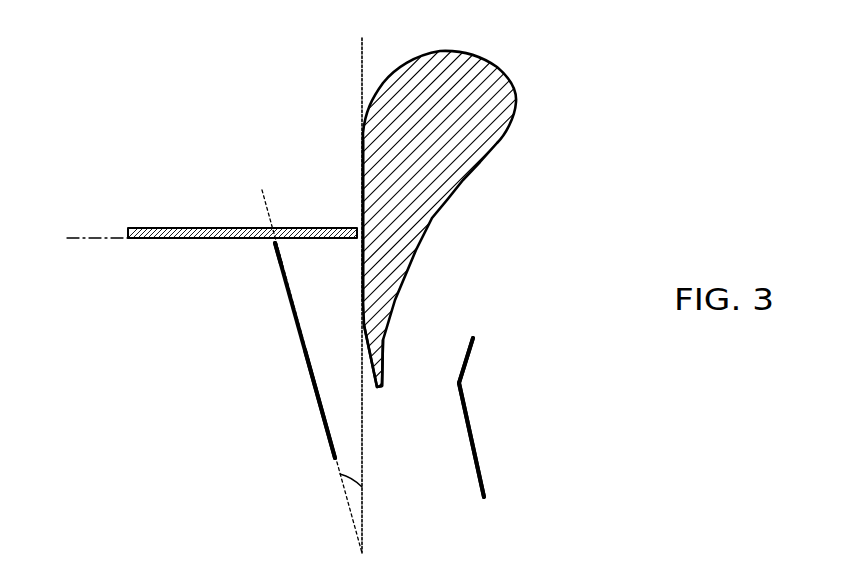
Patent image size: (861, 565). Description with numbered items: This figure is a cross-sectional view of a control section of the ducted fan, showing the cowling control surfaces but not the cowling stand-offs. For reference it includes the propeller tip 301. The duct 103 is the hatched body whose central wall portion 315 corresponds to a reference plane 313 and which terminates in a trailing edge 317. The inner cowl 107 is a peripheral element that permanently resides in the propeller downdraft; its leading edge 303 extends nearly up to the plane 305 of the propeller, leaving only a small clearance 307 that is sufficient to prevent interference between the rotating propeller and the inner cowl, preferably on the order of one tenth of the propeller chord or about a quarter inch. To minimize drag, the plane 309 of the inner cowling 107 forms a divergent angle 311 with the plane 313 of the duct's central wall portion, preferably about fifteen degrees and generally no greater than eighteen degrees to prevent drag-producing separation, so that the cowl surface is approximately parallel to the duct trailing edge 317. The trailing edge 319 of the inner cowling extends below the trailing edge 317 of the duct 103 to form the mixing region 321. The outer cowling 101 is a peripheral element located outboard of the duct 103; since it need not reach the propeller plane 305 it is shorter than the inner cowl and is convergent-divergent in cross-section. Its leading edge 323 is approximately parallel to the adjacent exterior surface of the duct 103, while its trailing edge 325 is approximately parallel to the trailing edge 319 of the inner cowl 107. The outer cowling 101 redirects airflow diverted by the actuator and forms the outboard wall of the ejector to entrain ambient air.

The outer cowling 101 is at (505, 388).
The duct 103 is at (457, 88).
The inner cowl 107 is at (305, 362).
The propeller tip 301 is at (155, 228).
The leading edge 303 is at (259, 264).
The plane 305 is at (96, 248).
The clearance 307 is at (302, 247).
The plane 309 is at (255, 210).
The divergent angle 311 is at (340, 474).
The plane 313 is at (352, 81).
The central wall portion 315 is at (375, 186).
The trailing edge 317 is at (382, 341).
The trailing edge 319 is at (306, 426).
The mixing region 321 is at (410, 436).
The leading edge 323 is at (447, 357).
The trailing edge 325 is at (457, 472).